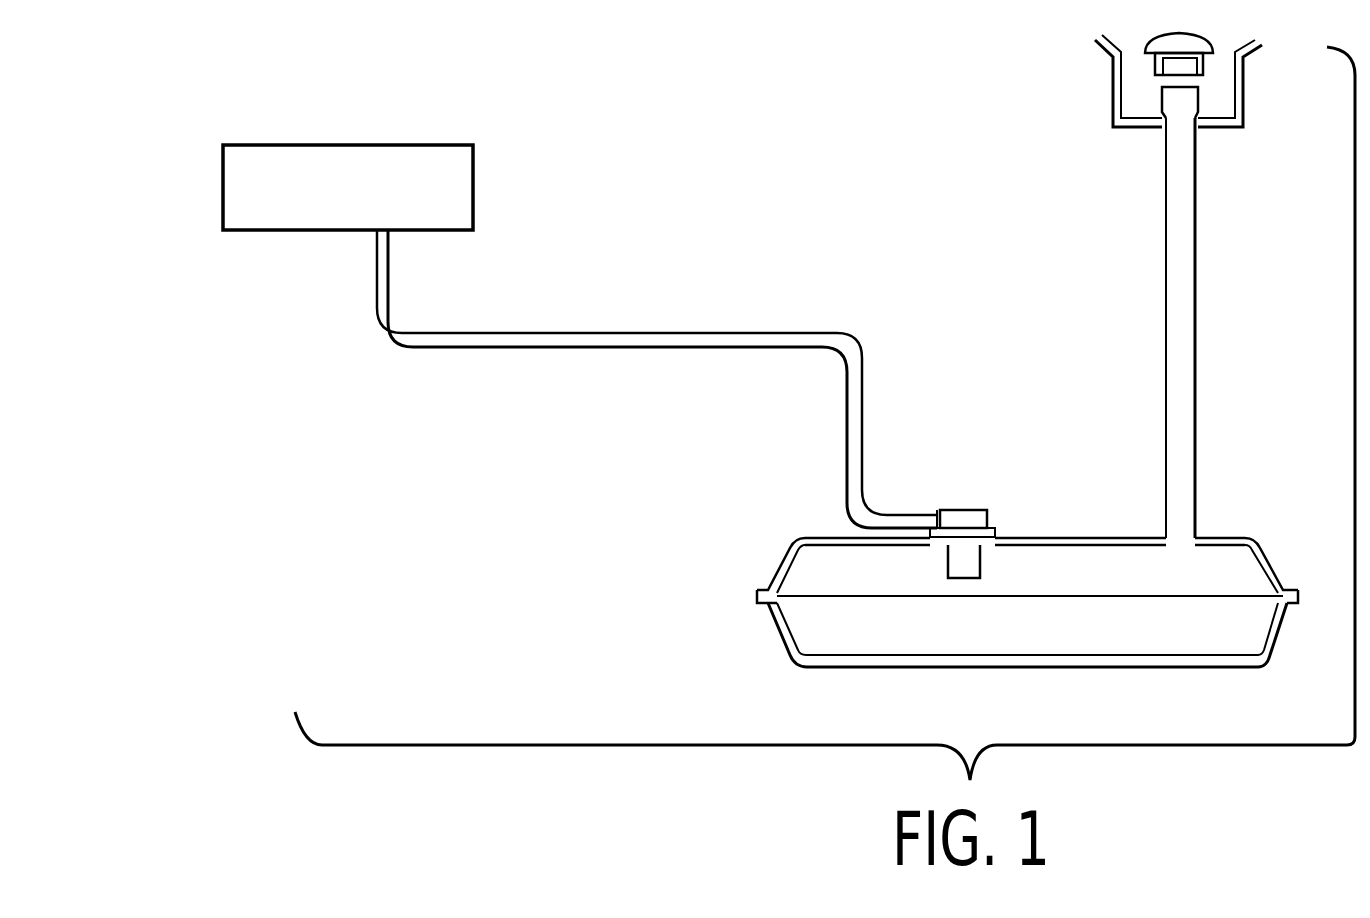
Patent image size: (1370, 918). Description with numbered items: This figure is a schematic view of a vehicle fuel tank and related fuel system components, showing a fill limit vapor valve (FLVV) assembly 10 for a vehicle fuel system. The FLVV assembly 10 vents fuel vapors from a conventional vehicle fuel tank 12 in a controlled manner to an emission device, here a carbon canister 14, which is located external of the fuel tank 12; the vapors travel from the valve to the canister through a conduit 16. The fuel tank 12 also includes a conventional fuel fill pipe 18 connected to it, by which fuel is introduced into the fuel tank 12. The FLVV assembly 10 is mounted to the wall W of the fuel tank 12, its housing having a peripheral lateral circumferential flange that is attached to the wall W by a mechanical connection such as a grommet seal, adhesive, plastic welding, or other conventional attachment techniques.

The carbon canister 14 is at (440, 145).
The conduit 16 is at (862, 365).
The fill limit vapor valve assembly 10 is at (990, 523).
The wall W is at (1037, 535).
The fuel tank 12 is at (780, 560).
The fuel fill pipe 18 is at (1197, 253).